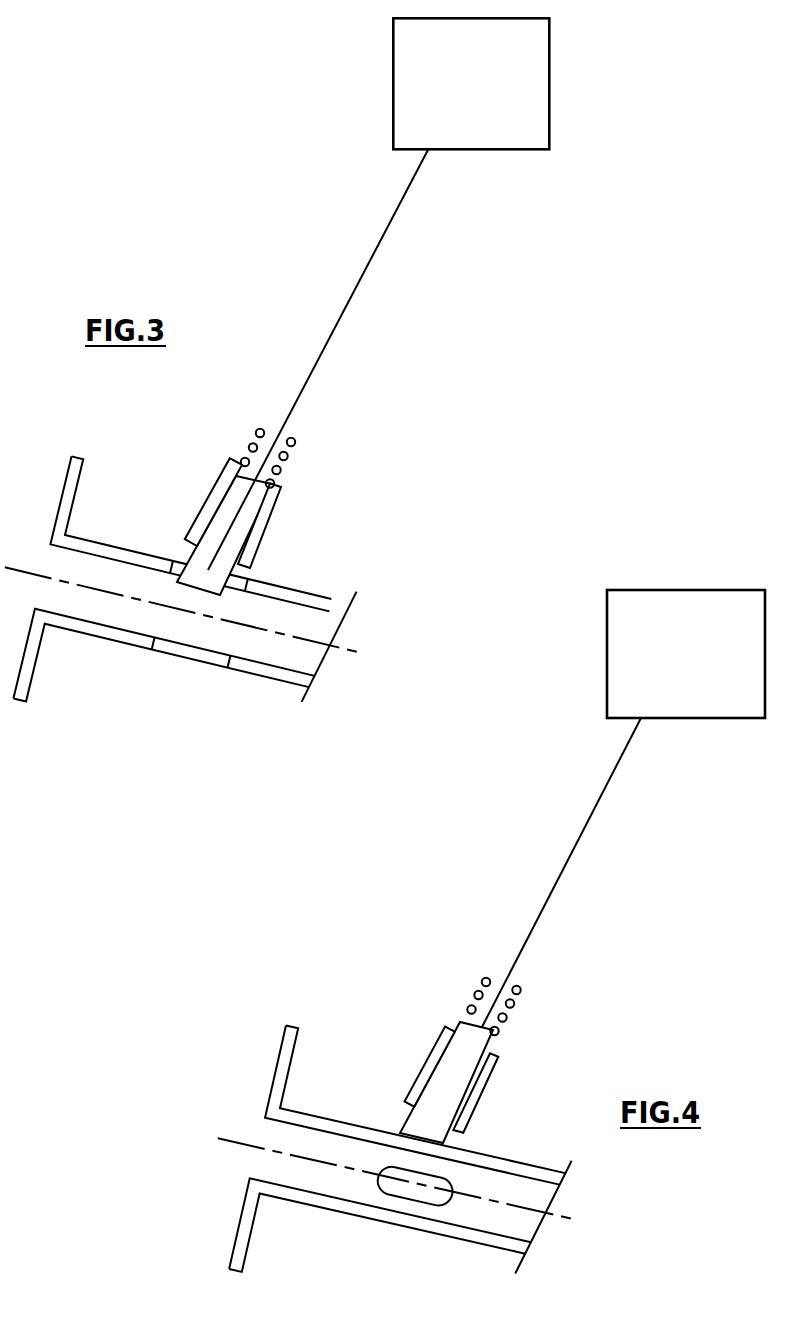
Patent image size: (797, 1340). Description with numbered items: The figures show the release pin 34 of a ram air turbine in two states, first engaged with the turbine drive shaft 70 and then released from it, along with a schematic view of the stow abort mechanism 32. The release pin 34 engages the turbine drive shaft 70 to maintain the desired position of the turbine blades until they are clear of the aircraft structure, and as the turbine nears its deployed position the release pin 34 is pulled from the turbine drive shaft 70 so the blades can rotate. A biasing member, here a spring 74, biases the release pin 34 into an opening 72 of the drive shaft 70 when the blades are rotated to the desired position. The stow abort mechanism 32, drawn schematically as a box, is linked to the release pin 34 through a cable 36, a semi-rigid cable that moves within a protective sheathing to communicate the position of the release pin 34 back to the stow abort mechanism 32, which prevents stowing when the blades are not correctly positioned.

In FIG. 3, the stow abort mechanism 32 is at (492, 100).
In FIG. 4, the stow abort mechanism 32 is at (703, 674).
In FIG. 3, the release pin 34 is at (257, 522).
In FIG. 4, the release pin 34 is at (463, 1116).
In FIG. 3, the cable 36 is at (370, 230).
In FIG. 4, the cable 36 is at (604, 813).
In FIG. 3, the turbine drive shaft 70 is at (247, 675).
In FIG. 4, the turbine drive shaft 70 is at (466, 1247).
In FIG. 3, the opening 72 is at (258, 571).
In FIG. 4, the opening 72 is at (458, 1177).
In FIG. 3, the spring 74 is at (267, 418).
In FIG. 4, the spring 74 is at (534, 1005).